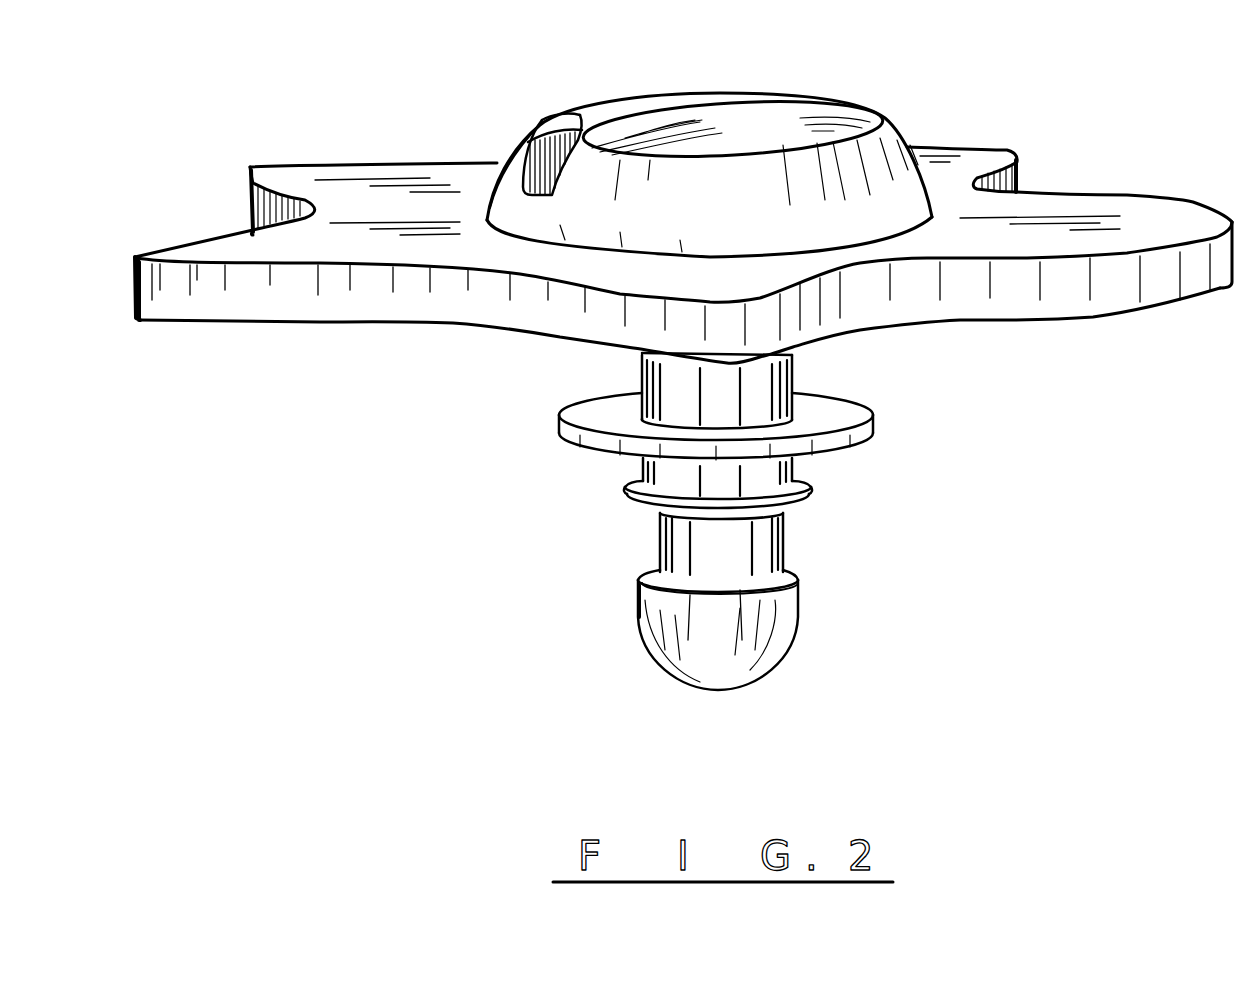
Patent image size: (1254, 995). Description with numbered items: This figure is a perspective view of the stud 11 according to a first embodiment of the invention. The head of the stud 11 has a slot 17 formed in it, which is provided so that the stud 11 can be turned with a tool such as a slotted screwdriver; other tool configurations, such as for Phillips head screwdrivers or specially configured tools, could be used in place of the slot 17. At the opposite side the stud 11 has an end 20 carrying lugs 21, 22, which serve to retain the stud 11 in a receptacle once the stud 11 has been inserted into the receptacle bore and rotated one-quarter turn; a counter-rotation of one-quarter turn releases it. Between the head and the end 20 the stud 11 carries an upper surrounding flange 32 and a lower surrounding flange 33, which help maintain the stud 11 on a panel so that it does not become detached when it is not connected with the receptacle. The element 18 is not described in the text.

The stud 11 is at (978, 95).
The slot 17 is at (567, 130).
The dome recess 18 is at (763, 173).
The end 20 is at (739, 601).
The lug 21 is at (650, 607).
The lug 22 is at (773, 613).
The upper surrounding flange 32 is at (830, 418).
The lower surrounding flange 33 is at (807, 487).